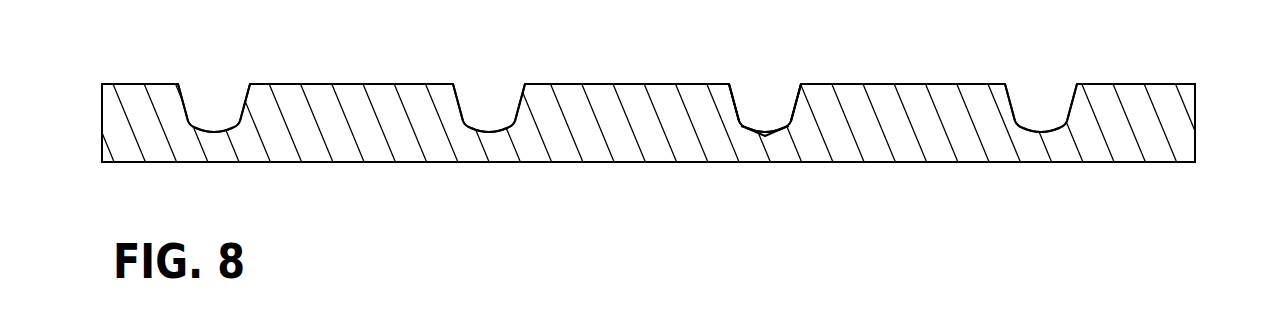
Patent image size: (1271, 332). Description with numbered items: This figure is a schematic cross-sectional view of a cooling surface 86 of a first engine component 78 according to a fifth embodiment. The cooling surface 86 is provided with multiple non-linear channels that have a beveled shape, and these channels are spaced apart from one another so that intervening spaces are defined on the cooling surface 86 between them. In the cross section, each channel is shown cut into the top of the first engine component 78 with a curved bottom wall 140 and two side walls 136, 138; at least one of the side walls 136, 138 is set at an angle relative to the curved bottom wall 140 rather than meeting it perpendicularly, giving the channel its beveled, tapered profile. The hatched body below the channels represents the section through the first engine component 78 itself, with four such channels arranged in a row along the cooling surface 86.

The first engine component 78 is at (1183, 82).
The cooling surface 86 is at (137, 84).
The side wall 136 is at (737, 106).
The curved bottom wall 140 is at (773, 131).
The side wall 138 is at (795, 108).